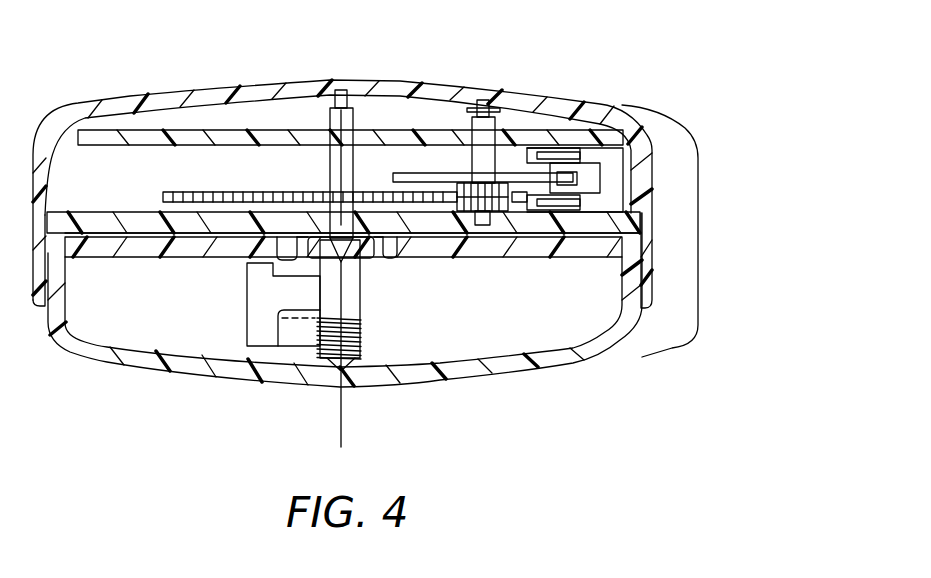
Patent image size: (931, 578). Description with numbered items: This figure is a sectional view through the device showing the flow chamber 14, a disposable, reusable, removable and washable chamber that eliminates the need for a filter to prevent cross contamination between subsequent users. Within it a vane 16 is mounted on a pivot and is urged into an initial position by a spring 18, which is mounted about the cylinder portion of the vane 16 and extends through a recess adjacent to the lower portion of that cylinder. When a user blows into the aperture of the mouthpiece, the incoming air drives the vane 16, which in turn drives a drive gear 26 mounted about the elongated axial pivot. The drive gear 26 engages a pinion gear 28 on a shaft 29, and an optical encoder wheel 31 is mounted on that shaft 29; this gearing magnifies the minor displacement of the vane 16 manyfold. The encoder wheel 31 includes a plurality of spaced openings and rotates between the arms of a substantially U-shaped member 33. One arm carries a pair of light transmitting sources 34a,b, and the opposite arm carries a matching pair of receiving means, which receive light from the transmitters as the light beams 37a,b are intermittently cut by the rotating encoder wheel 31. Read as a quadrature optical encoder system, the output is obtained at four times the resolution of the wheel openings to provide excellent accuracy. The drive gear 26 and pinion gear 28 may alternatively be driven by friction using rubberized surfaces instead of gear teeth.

The flow chamber 14 is at (107, 363).
The vane 16 is at (263, 340).
The spring 18 is at (363, 337).
The drive gear 26 is at (216, 190).
The pinion gear 28 is at (497, 200).
The shaft 29 is at (492, 162).
The optical encoder wheel 31 is at (433, 172).
The U-shaped member 33 is at (620, 165).
The light transmitting sources 34a,b is at (570, 150).
The light beams 37a,b is at (560, 172).